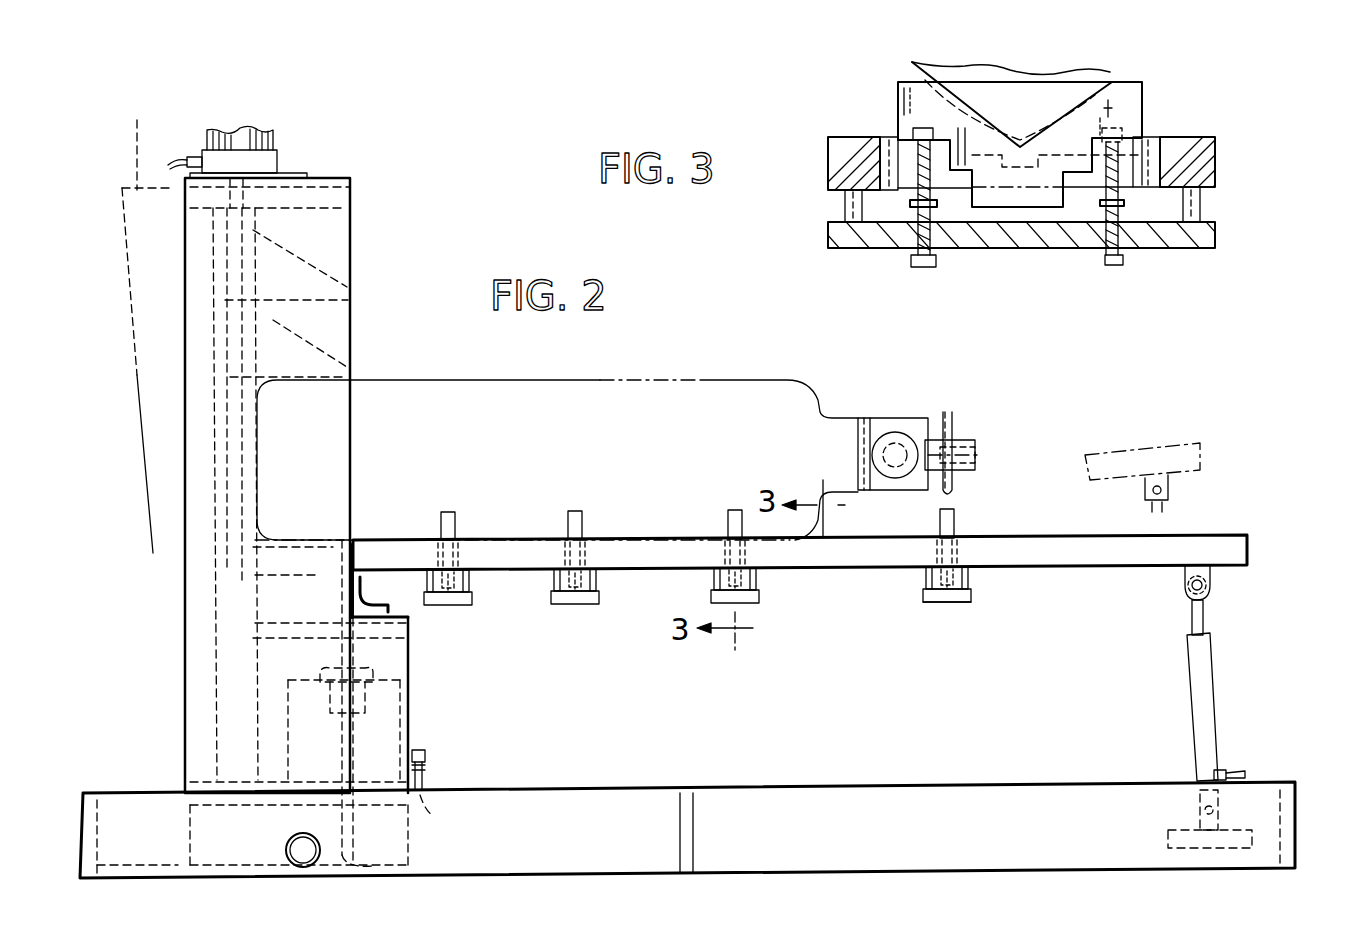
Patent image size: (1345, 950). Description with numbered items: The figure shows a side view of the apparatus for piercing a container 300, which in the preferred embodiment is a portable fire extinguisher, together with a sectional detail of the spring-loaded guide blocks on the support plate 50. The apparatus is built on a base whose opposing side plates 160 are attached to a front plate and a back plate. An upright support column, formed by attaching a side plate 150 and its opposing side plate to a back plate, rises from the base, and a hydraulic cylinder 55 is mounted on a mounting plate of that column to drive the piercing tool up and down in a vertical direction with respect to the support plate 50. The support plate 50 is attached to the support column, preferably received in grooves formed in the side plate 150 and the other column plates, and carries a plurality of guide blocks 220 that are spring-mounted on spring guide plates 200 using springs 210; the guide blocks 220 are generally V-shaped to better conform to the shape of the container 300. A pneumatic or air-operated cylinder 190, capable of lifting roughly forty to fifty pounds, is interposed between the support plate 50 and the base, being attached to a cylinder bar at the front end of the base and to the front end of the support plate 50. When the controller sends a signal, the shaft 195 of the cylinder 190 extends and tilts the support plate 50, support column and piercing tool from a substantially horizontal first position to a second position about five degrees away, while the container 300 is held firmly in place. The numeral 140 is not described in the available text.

In FIG. 2, the support plate 50 is at (1247, 548).
In FIG. 3, the support plate 50 is at (1215, 157).
In FIG. 2, the hydraulic cylinder 55 is at (413, 712).
In FIG. 2, the mounting hole 140 is at (304, 856).
In FIG. 2, the side plate 150 is at (320, 233).
In FIG. 2, the side plate 160 is at (914, 851).
In FIG. 2, the cylinder 190 is at (1218, 708).
In FIG. 2, the shaft 195 is at (1205, 617).
In FIG. 2, the spring guide plate 200 is at (958, 603).
In FIG. 3, the spring guide plate 200 is at (1215, 232).
In FIG. 2, the spring 210 is at (968, 584).
In FIG. 3, the spring 210 is at (1120, 208).
In FIG. 2, the guide block 220 is at (954, 530).
In FIG. 3, the guide block 220 is at (1145, 102).
In FIG. 2, the container 300 is at (805, 395).
In FIG. 3, the container 300 is at (1112, 82).